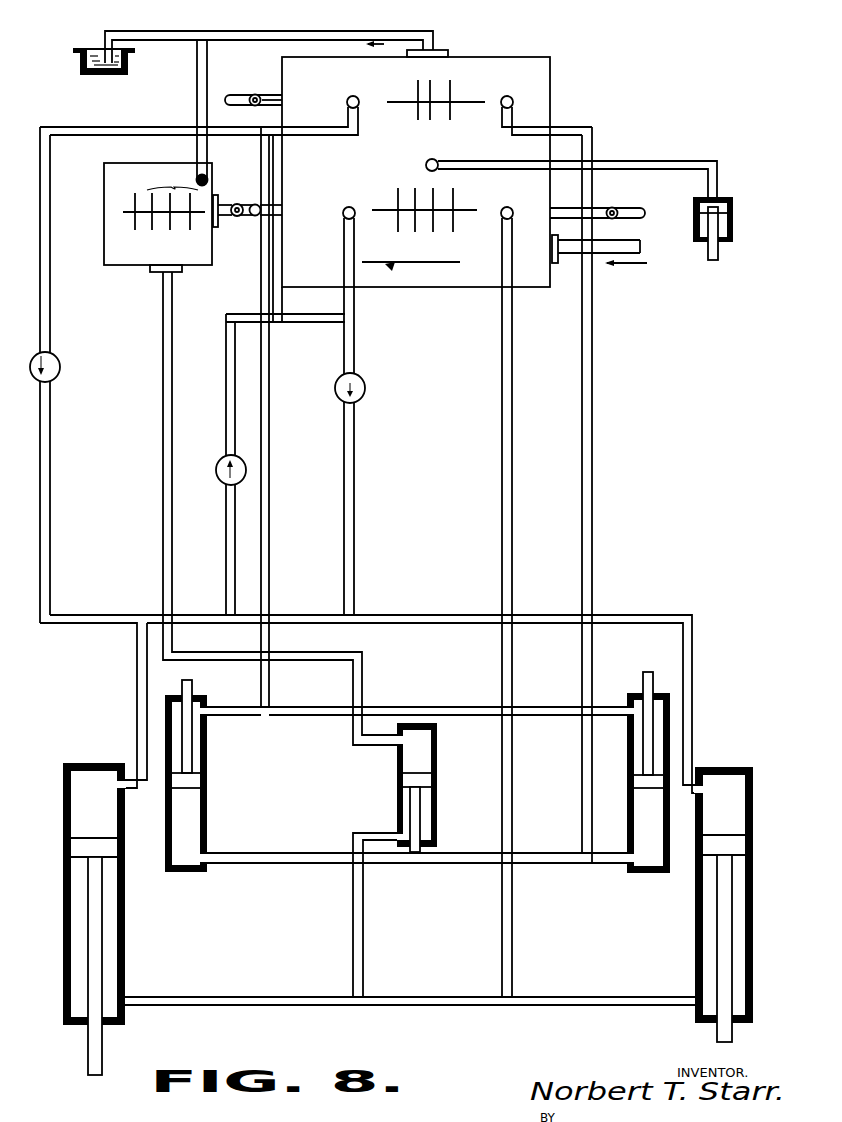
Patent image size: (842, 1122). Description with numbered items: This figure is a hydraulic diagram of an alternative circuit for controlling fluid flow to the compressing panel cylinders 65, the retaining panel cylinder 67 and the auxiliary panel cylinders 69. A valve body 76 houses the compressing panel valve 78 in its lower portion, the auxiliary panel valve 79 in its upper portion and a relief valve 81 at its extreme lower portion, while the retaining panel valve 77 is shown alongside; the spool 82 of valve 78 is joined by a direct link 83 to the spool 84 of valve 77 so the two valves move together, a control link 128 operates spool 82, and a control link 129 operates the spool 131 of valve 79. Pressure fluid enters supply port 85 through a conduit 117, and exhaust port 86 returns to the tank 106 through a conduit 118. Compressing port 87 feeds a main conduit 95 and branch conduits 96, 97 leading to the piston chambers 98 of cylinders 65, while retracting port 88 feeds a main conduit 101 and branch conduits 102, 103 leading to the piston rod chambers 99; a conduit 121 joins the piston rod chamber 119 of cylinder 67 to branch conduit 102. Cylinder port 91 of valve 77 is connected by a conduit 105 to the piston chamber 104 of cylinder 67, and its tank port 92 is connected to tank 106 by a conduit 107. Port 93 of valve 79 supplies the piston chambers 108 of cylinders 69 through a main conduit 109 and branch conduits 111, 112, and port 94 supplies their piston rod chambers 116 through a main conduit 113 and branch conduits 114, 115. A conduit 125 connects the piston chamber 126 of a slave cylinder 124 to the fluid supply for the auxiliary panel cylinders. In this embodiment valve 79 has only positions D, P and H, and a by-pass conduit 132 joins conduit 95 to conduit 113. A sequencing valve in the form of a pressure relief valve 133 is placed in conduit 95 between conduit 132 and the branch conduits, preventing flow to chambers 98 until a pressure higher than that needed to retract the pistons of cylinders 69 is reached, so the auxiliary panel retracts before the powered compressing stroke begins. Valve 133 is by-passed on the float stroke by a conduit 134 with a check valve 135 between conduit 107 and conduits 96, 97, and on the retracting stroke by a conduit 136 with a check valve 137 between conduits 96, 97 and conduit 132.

The compressing panel cylinders 65 is at (125, 942).
The retaining panel cylinder 67 is at (436, 780).
The auxiliary panel cylinders 69 is at (209, 822).
The valve body 76 is at (556, 106).
The retaining panel valve 77 is at (128, 215).
The compressing panel valve 78 is at (389, 216).
The auxiliary panel valve 79 is at (400, 106).
The relief valve 81 is at (411, 271).
The spool 82 is at (284, 211).
The direct link 83 is at (240, 217).
The spool 84 is at (227, 203).
The supply port 85 is at (554, 259).
The exhaust port 86 is at (450, 50).
The compressing port 87 is at (351, 207).
The retracting port 88 is at (519, 195).
The cylinder port 91 is at (182, 269).
The tank port 92 is at (208, 177).
The port 93 is at (510, 96).
The port 94 is at (356, 81).
The main conduit 95 is at (356, 502).
The branch conduit 96 is at (290, 613).
The branch conduit 97 is at (430, 613).
The piston chambers 98 is at (66, 807).
The piston rod chambers 99 is at (75, 945).
The main conduit 101 is at (513, 347).
The branch conduit 102 is at (420, 997).
The branch conduit 103 is at (560, 1006).
The piston chamber 104 is at (424, 747).
The conduit 105 is at (162, 413).
The tank 106 is at (78, 67).
The conduit 107 is at (195, 57).
The piston chambers 108 is at (186, 858).
The main conduit 109 is at (593, 370).
The branch conduit 111 is at (427, 864).
The branch conduit 112 is at (615, 862).
The main conduit 113 is at (270, 511).
The branch conduit 114 is at (230, 716).
The branch conduit 115 is at (295, 717).
The piston rod chambers 116 is at (198, 755).
The conduit 117 is at (625, 240).
The conduit 118 is at (326, 34).
The piston rod chamber 119 is at (428, 812).
The conduit 121 is at (364, 937).
The slave cylinder 124 is at (733, 234).
The conduit 125 is at (653, 160).
The piston chamber 126 is at (733, 204).
The control link 128 is at (628, 207).
The control link 129 is at (241, 82).
The spool 131 is at (271, 104).
The by-pass conduit 132 is at (292, 322).
The pressure relief valve 133 is at (367, 387).
The conduit 134 is at (51, 510).
The check valve 135 is at (60, 374).
The conduit 136 is at (226, 542).
The check valve 137 is at (218, 460).